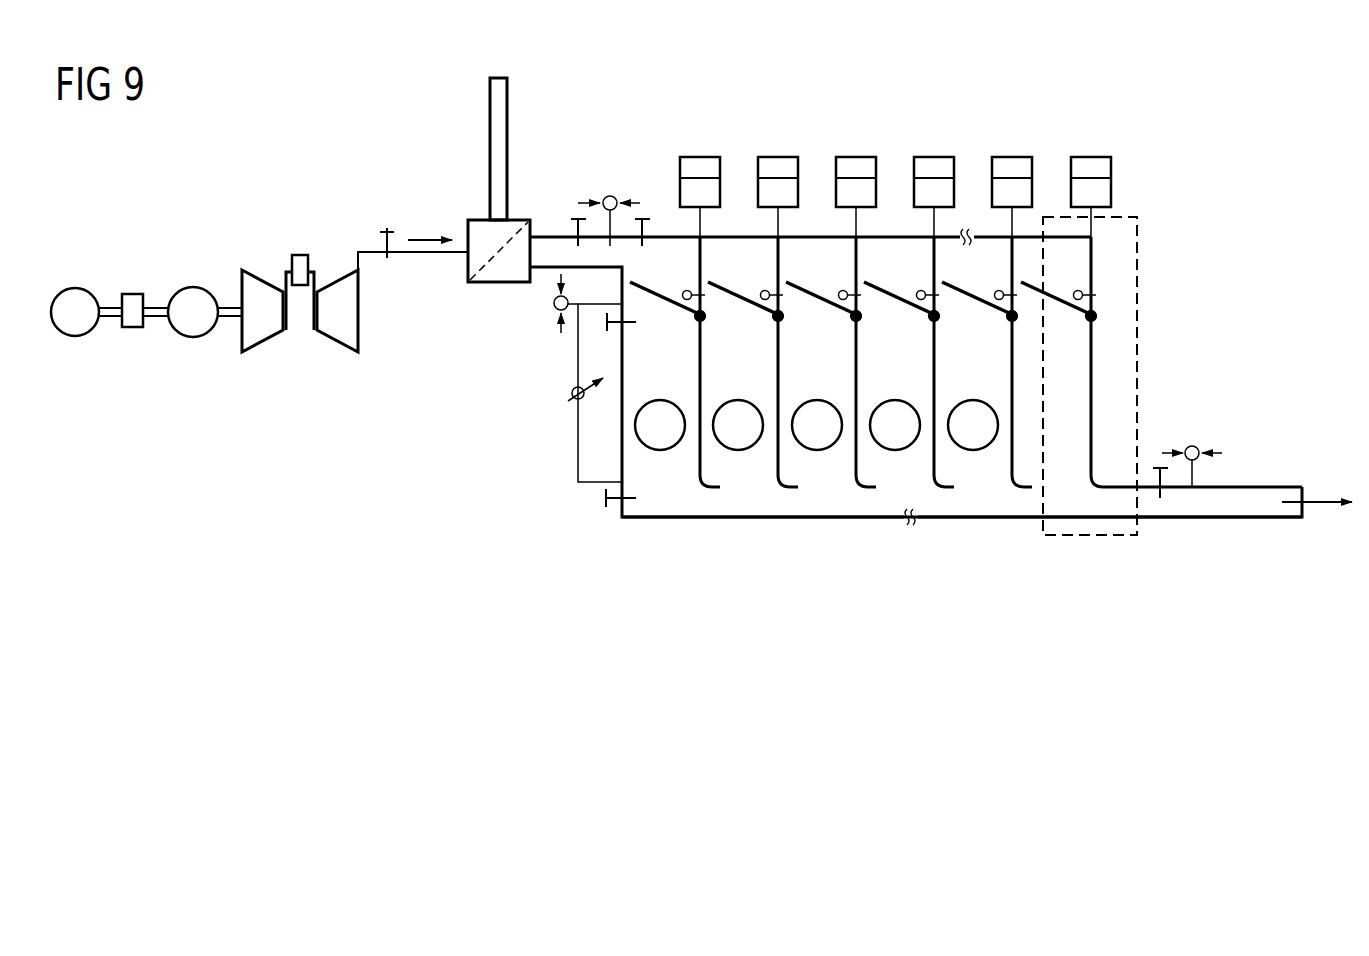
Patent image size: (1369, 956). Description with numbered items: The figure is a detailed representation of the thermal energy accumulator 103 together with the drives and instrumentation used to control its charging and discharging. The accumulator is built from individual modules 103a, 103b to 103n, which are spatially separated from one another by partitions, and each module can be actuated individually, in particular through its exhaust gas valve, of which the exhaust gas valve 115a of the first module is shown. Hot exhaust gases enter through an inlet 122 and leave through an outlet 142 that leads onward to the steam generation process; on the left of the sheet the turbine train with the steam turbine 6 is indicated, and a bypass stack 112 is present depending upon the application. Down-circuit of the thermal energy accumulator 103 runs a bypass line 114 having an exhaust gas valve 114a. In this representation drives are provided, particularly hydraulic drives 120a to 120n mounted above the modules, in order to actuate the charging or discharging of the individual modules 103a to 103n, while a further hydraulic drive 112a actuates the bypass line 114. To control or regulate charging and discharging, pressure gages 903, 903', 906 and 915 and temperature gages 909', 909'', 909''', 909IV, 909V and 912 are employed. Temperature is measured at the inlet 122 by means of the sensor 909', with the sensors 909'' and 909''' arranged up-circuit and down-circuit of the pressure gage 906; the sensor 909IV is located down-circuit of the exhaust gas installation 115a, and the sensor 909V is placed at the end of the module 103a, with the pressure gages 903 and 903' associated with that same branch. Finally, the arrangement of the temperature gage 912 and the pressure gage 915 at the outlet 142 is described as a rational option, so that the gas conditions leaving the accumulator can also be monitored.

The steam turbine 6 is at (298, 340).
The bypass stack 112 is at (489, 95).
The inlet 122 is at (418, 234).
The temperature gage 909' is at (368, 206).
The temperature gage 909'' is at (574, 186).
The temperature gage 909''' is at (657, 186).
The pressure gage 906 is at (610, 195).
The hydraulic drive 120a is at (702, 153).
The hydraulic drive 120n is at (1010, 153).
The hydraulic drive 112a is at (1090, 153).
The exhaust gas valve 114a is at (1058, 298).
The exhaust gas valve 115a is at (658, 297).
The pressure gage 903 is at (503, 303).
The pressure gage 903' is at (551, 393).
The temperature gage 909IV is at (613, 330).
The temperature gage 909V is at (605, 498).
The module 103a is at (660, 450).
The module 103b is at (738, 450).
The module 103n is at (973, 450).
The thermal energy accumulator 103 is at (849, 582).
The bypass line 114 is at (1097, 538).
The temperature gage 912 is at (1173, 473).
The pressure gage 915 is at (1192, 446).
The outlet 142 is at (1321, 504).